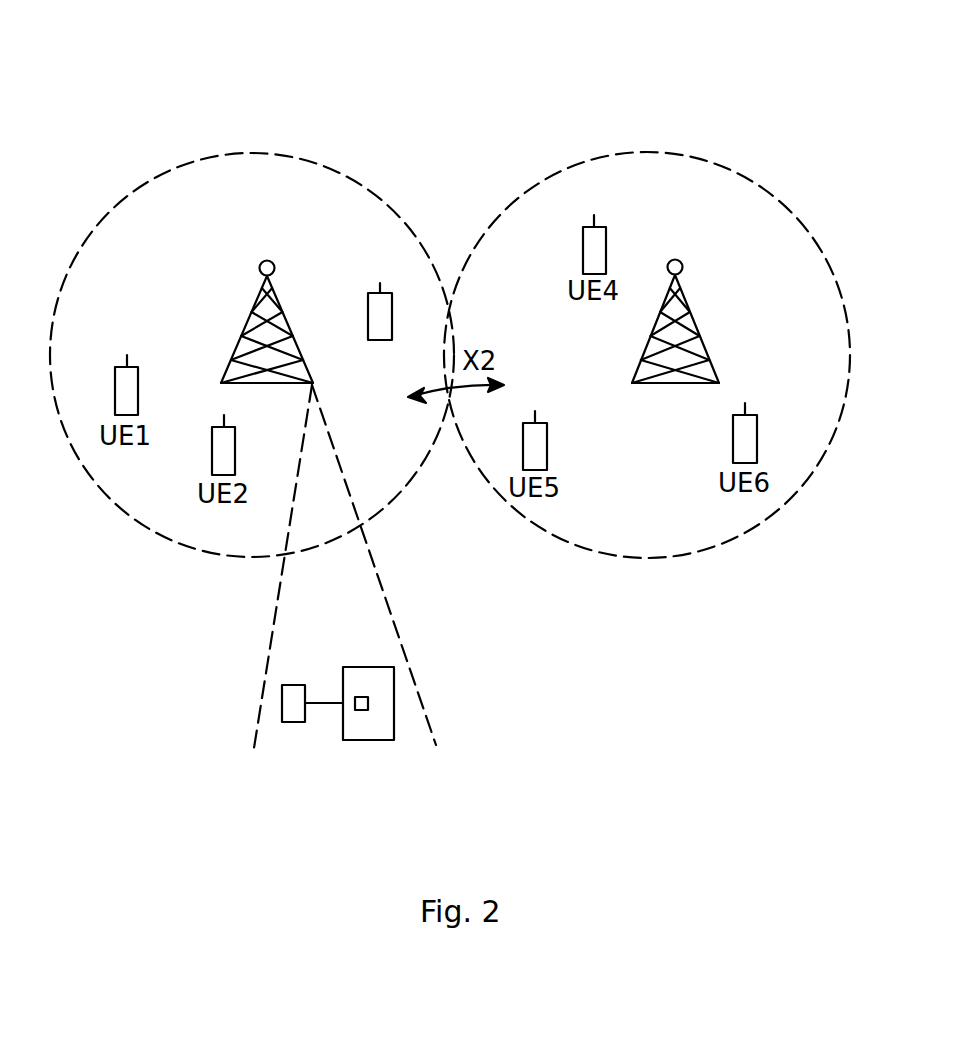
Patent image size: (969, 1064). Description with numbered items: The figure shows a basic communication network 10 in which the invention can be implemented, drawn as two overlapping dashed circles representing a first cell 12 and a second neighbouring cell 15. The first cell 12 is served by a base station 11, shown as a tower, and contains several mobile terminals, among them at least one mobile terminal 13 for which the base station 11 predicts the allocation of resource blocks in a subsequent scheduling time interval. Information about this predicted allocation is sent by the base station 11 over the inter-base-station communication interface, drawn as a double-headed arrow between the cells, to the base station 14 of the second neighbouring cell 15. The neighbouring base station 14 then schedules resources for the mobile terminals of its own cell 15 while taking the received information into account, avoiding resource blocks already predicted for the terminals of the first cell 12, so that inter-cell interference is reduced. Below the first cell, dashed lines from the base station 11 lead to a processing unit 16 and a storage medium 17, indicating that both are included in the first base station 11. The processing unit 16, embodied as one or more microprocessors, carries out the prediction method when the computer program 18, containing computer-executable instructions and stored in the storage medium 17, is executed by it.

The communication network 10 is at (565, 66).
The base station 11 is at (265, 260).
The first cell 12 is at (273, 182).
The mobile terminal 13 is at (378, 275).
The base station 14 is at (675, 258).
The second neighbouring cell 15 is at (715, 182).
The processing unit 16 is at (283, 717).
The storage medium 17 is at (365, 727).
The computer program 18 is at (368, 703).